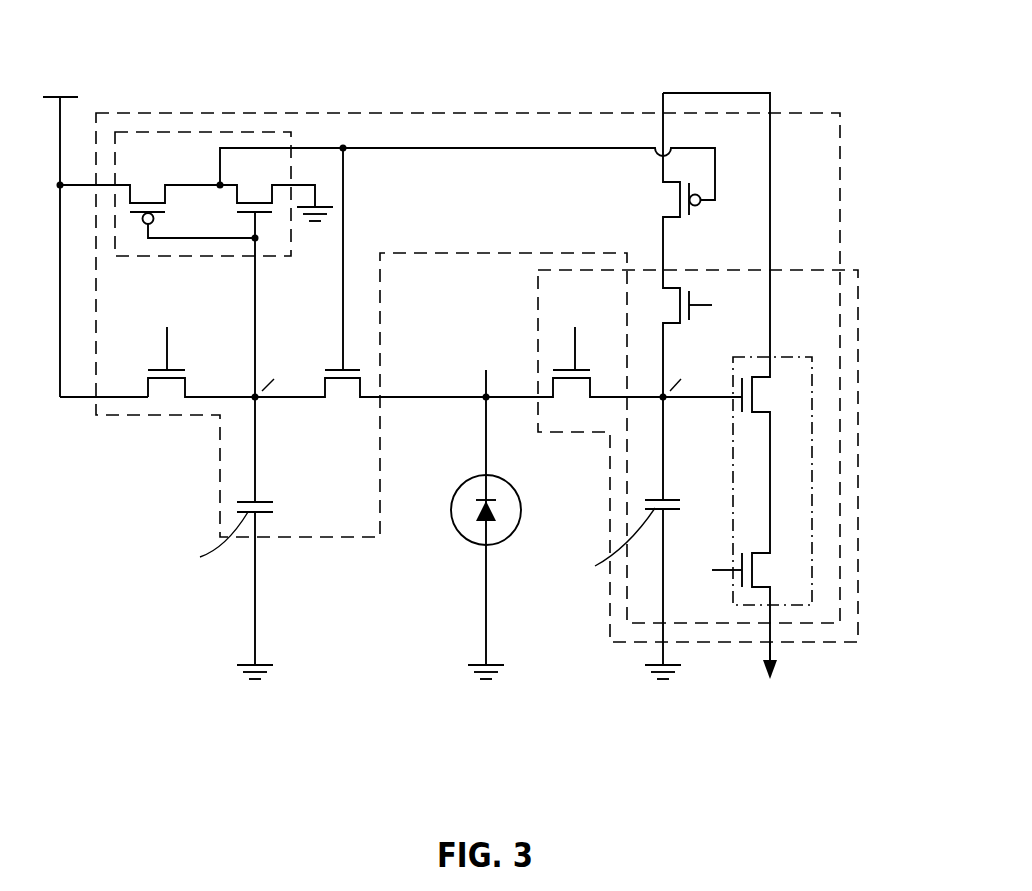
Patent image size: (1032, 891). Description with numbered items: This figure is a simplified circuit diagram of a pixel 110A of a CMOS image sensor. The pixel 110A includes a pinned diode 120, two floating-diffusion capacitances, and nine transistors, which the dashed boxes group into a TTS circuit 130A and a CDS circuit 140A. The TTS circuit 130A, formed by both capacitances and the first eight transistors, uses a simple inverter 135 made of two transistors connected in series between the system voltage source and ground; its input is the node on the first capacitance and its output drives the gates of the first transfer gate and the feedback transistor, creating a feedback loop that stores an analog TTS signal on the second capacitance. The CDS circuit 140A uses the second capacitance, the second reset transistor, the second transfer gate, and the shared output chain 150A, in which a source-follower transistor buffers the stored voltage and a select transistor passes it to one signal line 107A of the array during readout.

The pixel 110A is at (147, 40).
The pinned diode 120 is at (465, 541).
The TTS circuit 130A is at (347, 113).
The inverter 135 is at (262, 257).
The CDS circuit 140A is at (860, 292).
The output chain 150A is at (815, 527).
The signal line 107A is at (772, 648).